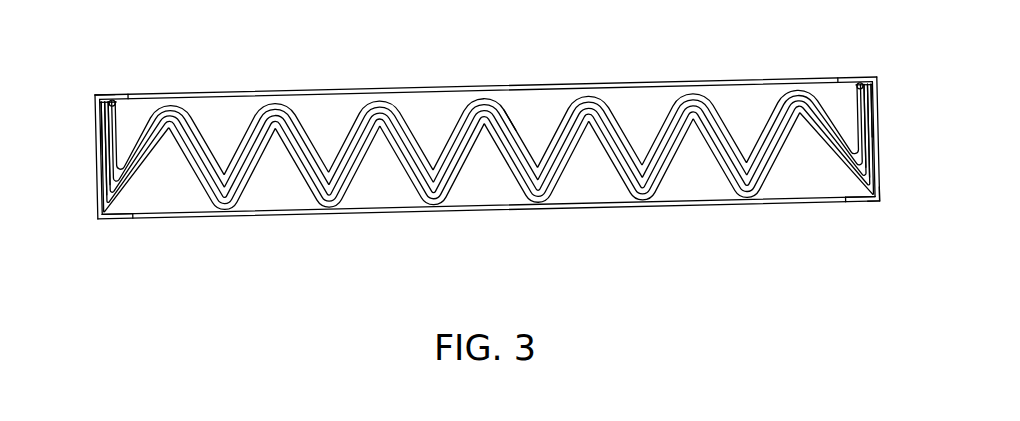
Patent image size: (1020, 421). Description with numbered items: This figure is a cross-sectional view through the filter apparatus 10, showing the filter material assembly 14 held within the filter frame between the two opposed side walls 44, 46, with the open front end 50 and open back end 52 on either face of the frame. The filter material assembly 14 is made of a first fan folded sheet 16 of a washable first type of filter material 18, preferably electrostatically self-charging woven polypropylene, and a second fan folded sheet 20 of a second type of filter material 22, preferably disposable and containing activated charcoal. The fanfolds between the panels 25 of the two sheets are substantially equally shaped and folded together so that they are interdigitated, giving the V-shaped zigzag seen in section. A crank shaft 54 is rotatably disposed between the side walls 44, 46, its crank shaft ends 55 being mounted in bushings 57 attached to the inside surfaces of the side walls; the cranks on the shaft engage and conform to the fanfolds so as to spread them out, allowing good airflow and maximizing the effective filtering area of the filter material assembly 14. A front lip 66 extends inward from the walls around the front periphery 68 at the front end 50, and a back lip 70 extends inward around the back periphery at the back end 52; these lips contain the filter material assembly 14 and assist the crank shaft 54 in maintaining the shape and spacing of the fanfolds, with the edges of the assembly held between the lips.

The filter apparatus 10 is at (219, 270).
The filter material assembly 14 is at (610, 186).
The first fan folded sheet 16 is at (348, 185).
The first type of filter material 18 is at (356, 167).
The second fan folded sheet 20 is at (402, 137).
The second type of filter material 22 is at (353, 138).
The panels 25 is at (104, 161).
The side wall 44 is at (878, 166).
The side wall 46 is at (96, 198).
The open front end 50 is at (683, 218).
The open back end 52 is at (726, 76).
The crank shaft 54 is at (503, 110).
The crank shaft ends 55 is at (101, 93).
The bushings 57 is at (102, 137).
The front lip 66 is at (115, 219).
The front periphery 68 is at (878, 203).
The back lip 70 is at (118, 92).